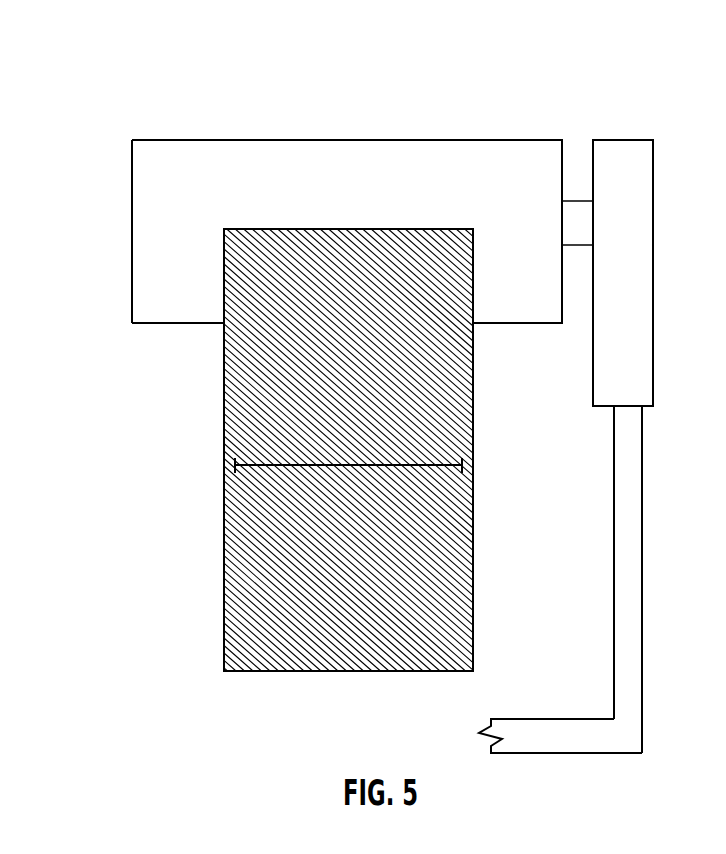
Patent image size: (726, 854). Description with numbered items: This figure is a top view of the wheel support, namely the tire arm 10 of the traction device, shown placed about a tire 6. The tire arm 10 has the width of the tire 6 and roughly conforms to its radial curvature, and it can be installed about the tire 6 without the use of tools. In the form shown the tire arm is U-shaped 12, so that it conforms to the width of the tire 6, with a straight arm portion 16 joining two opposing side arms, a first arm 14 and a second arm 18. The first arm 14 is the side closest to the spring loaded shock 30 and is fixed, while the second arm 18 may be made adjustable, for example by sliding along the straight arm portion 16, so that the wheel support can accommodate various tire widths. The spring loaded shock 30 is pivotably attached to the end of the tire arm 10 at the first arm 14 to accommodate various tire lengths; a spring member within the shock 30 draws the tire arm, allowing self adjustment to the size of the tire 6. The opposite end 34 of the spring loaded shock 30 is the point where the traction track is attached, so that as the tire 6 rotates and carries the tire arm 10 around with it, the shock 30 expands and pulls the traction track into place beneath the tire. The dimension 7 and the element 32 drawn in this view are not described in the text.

The tire 6 is at (348, 671).
The width dimension 7 is at (287, 466).
The tire arm 10 is at (358, 146).
The U-shaped tire arm 12 is at (293, 228).
The first arm 14 is at (555, 155).
The straight arm portion 16 is at (475, 147).
The second arm 18 is at (138, 238).
The spring loaded shock 30 is at (629, 417).
The connector block 32 is at (645, 160).
The opposite end of the spring loaded shock 34 is at (632, 733).